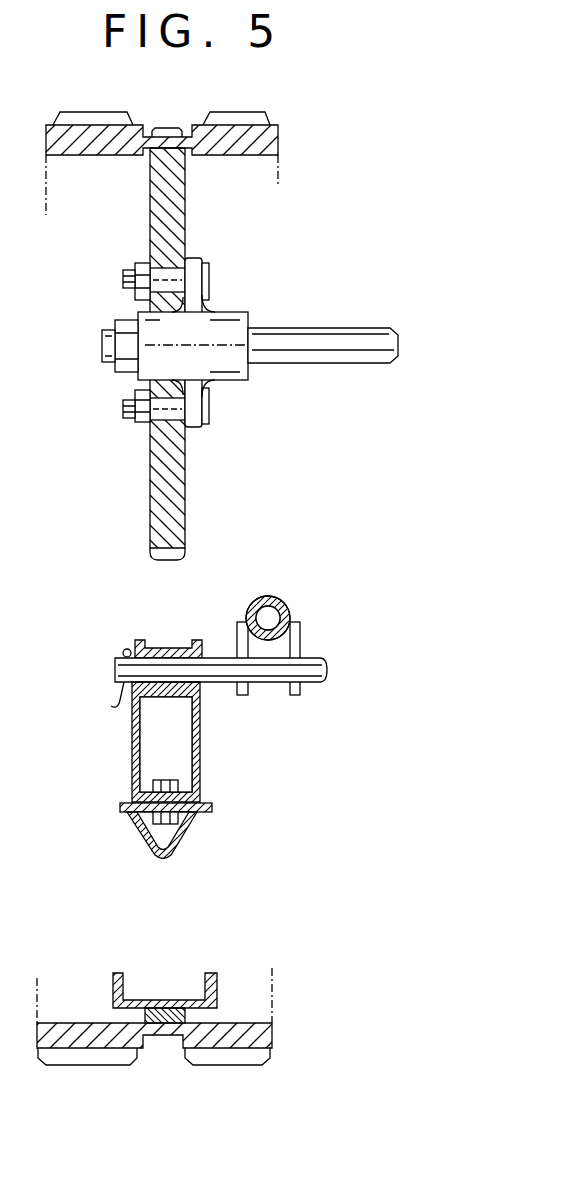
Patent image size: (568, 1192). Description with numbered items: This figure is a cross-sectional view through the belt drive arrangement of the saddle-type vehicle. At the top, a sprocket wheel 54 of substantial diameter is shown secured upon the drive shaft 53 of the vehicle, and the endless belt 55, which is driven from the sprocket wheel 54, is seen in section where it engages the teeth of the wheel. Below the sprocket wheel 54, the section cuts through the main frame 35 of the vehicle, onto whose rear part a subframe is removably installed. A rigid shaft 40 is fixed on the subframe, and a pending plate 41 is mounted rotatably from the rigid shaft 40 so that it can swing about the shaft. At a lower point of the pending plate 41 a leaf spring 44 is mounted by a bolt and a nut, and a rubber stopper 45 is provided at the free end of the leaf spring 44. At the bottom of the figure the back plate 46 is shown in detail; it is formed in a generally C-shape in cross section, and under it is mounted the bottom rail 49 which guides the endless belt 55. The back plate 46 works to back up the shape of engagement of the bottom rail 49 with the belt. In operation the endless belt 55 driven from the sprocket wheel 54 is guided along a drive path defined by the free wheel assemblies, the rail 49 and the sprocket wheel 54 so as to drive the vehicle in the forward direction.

The main frame 35 is at (275, 597).
The rigid shaft 40 is at (127, 670).
The pending plate 41 is at (137, 740).
The leaf spring 44 is at (212, 808).
The rubber stopper 45 is at (147, 840).
The back plate 46 is at (215, 988).
The bottom rail 49 is at (142, 1017).
The drive shaft 53 is at (327, 348).
The sprocket wheel 54 is at (173, 215).
The endless belt 55 is at (270, 148).